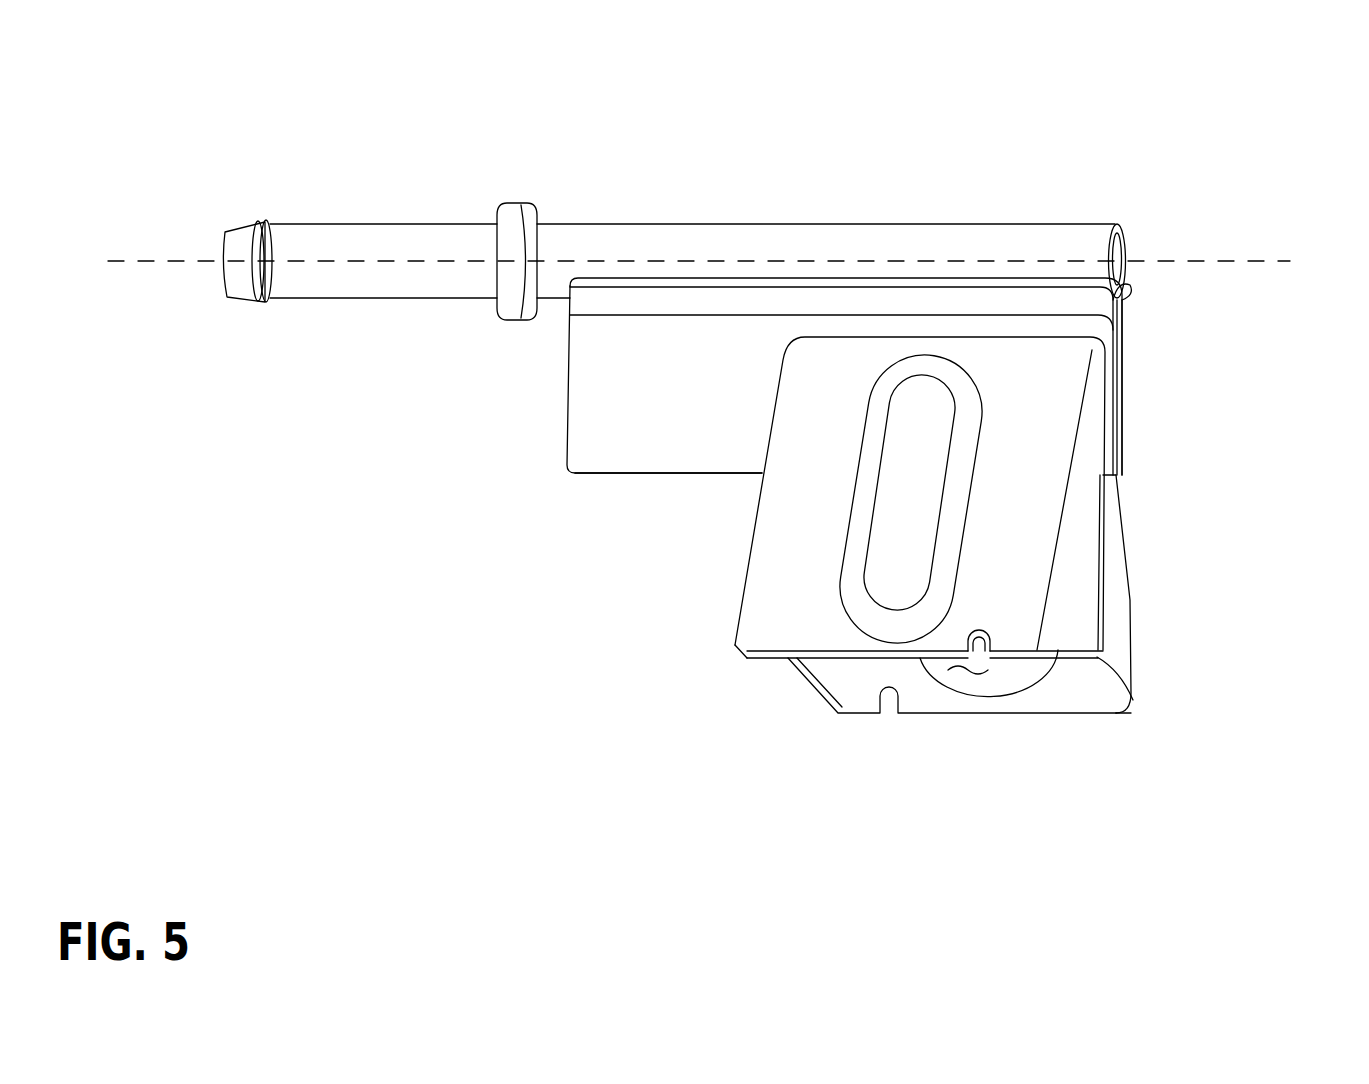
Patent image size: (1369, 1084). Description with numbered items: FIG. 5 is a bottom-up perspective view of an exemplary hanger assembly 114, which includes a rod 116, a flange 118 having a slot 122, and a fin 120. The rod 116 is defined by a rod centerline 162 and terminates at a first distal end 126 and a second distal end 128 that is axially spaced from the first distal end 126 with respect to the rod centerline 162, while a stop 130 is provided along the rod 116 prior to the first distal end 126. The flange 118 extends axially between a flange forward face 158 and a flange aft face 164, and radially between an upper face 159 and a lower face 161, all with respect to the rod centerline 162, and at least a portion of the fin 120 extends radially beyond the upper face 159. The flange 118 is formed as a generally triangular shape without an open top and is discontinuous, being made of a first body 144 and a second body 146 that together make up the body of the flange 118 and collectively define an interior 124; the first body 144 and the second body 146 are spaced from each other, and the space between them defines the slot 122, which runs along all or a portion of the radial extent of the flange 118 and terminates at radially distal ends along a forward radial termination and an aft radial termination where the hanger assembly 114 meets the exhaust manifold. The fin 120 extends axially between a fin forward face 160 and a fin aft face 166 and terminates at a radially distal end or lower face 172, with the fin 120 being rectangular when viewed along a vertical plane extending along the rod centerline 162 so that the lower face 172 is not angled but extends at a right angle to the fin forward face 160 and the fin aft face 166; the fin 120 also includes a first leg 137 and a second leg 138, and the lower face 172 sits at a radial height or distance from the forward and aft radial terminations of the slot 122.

The hanger assembly 114 is at (95, 73).
The rod 116 is at (380, 222).
The flange 118 is at (1135, 612).
The fin 120 is at (1132, 345).
The slot 122 is at (1103, 630).
The interior 124 is at (965, 670).
The first distal end 126 is at (225, 290).
The second distal end 128 is at (1120, 235).
The stop 130 is at (520, 205).
The first leg 137 is at (575, 318).
The second leg 138 is at (1130, 303).
The first body 144 is at (740, 577).
The second body 146 is at (1133, 578).
The flange forward face 158 is at (797, 662).
The upper face 159 is at (890, 337).
The fin forward face 160 is at (568, 380).
The lower face 161 is at (745, 660).
The rod centerline 162 is at (1270, 261).
The flange aft face 164 is at (1133, 683).
The fin aft face 166 is at (1122, 405).
The lower face 172 is at (690, 473).